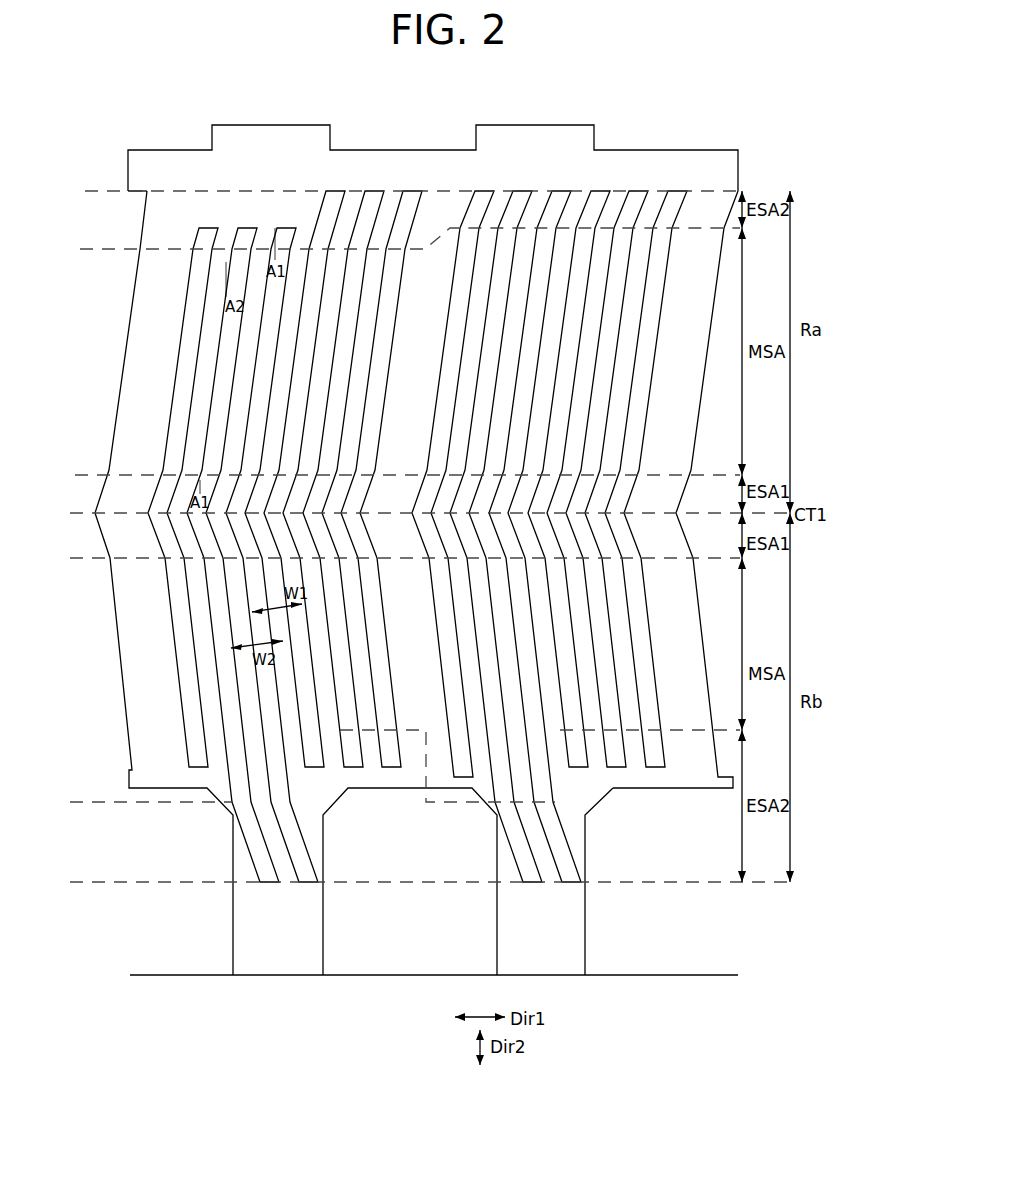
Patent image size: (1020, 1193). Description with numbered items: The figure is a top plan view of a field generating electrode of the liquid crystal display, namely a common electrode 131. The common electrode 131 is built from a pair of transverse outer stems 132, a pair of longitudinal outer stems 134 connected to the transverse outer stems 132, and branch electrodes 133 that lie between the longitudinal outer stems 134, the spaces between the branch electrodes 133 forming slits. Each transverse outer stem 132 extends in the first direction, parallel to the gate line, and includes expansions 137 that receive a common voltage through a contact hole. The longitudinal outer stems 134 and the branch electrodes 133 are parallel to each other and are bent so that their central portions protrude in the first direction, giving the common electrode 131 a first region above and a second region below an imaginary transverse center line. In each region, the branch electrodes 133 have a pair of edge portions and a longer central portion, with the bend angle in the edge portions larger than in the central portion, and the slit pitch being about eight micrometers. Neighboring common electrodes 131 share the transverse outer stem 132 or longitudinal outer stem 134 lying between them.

The common electrode 131 is at (390, 1140).
The transverse outer stem 132 is at (346, 151).
The branch electrodes 133 is at (237, 620).
The longitudinal outer stem 134 is at (652, 372).
The expansion 137 is at (195, 245).